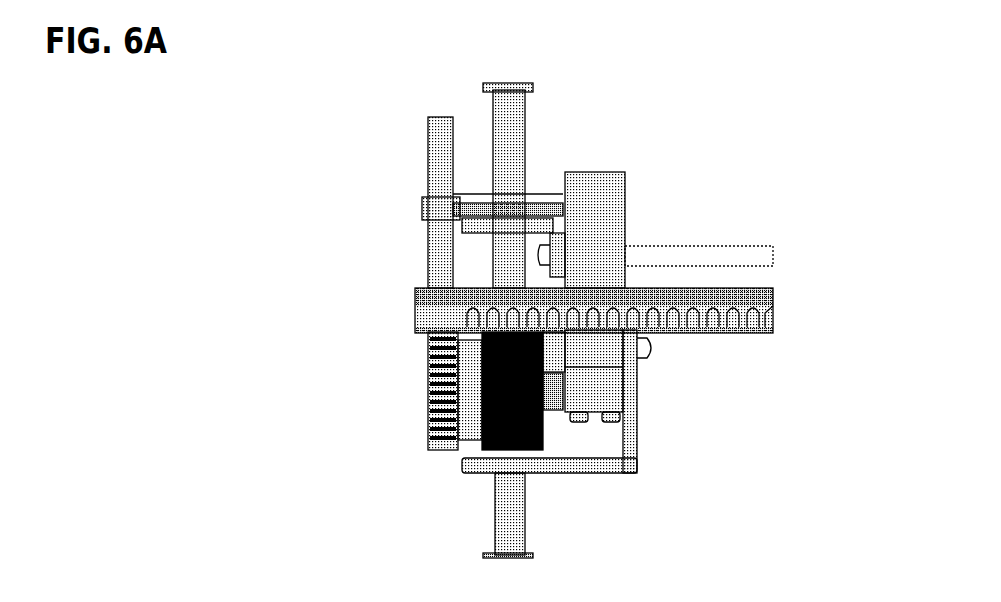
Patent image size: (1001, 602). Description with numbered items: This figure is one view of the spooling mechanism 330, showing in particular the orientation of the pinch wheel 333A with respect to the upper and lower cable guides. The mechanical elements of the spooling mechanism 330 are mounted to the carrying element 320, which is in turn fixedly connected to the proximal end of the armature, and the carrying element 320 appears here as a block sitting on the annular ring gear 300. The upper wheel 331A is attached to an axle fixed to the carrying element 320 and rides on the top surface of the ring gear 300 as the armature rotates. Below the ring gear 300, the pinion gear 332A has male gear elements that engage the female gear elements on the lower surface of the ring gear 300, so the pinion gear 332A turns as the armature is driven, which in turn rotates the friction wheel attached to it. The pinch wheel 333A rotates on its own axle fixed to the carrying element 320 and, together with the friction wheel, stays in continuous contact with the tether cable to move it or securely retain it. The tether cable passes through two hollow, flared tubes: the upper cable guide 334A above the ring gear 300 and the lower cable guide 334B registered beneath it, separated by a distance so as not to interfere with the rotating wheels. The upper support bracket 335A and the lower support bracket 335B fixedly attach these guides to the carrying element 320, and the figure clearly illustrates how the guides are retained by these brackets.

The spooling mechanism 330 is at (285, 329).
The upper wheel 331A is at (440, 218).
The upper cable guide 334A is at (520, 134).
The upper support bracket 335A is at (535, 222).
The carrying element 320 is at (608, 247).
The annular ring gear 300 is at (753, 300).
The pinion gear 332A is at (438, 425).
The pinch wheel 333A is at (502, 422).
The lower support bracket 335B is at (630, 465).
The lower cable guide 334B is at (512, 525).